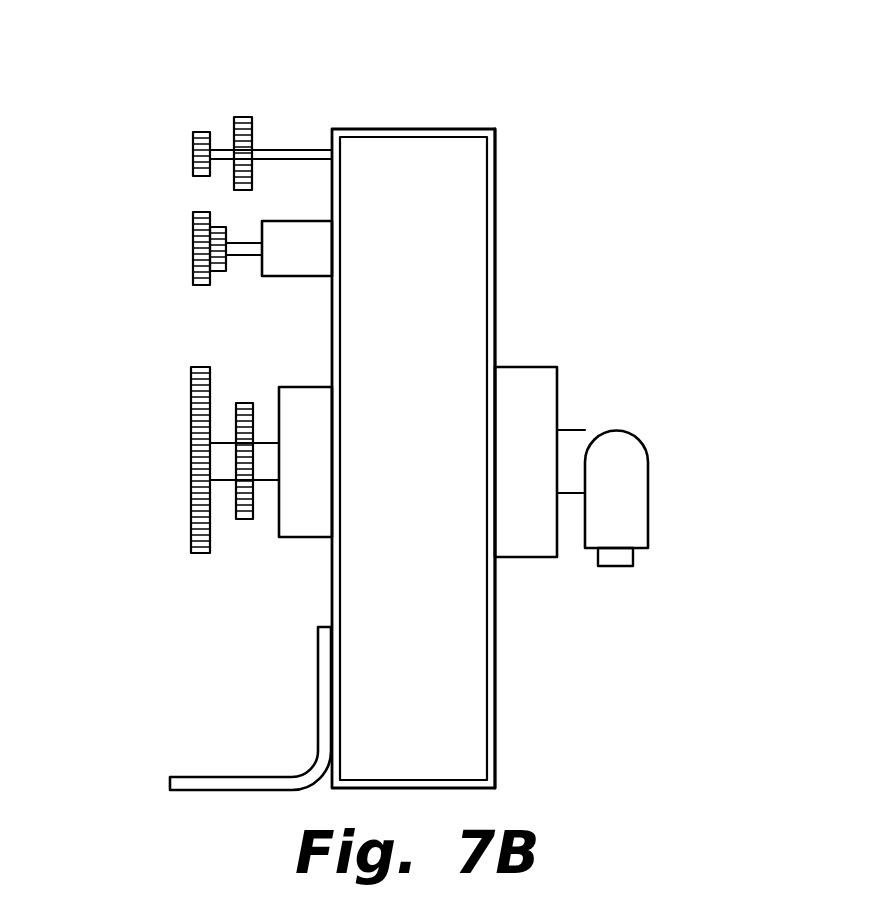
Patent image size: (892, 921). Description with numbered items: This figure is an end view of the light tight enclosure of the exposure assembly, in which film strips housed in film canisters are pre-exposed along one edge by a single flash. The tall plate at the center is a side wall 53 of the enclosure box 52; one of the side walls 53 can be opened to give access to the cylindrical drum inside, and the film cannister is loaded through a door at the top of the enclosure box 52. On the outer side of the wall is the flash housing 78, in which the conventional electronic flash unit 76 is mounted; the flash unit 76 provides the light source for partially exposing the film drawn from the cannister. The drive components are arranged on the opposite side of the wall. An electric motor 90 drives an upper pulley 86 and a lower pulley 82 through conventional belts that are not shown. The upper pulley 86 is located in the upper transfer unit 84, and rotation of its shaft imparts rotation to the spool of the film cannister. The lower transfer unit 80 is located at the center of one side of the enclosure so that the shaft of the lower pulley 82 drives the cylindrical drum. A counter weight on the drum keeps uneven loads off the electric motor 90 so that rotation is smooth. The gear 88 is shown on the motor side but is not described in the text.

The enclosure box 52 is at (430, 223).
The side wall 53 is at (495, 744).
The electronic flash unit 76 is at (616, 462).
The flash housing 78 is at (523, 515).
The lower transfer unit 80 is at (245, 519).
The lower pulley 82 is at (193, 508).
The upper transfer unit 84 is at (240, 117).
The upper pulley 86 is at (202, 131).
The gear 88 is at (192, 250).
The electric motor 90 is at (305, 253).